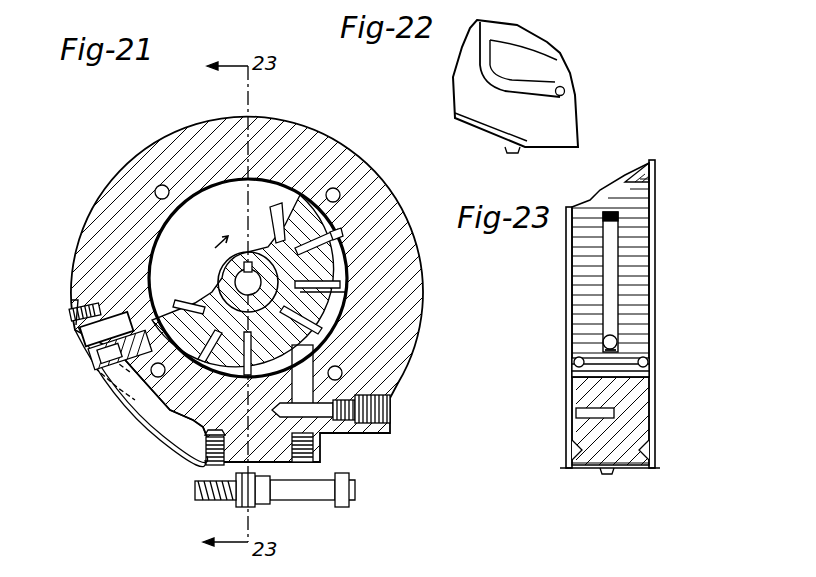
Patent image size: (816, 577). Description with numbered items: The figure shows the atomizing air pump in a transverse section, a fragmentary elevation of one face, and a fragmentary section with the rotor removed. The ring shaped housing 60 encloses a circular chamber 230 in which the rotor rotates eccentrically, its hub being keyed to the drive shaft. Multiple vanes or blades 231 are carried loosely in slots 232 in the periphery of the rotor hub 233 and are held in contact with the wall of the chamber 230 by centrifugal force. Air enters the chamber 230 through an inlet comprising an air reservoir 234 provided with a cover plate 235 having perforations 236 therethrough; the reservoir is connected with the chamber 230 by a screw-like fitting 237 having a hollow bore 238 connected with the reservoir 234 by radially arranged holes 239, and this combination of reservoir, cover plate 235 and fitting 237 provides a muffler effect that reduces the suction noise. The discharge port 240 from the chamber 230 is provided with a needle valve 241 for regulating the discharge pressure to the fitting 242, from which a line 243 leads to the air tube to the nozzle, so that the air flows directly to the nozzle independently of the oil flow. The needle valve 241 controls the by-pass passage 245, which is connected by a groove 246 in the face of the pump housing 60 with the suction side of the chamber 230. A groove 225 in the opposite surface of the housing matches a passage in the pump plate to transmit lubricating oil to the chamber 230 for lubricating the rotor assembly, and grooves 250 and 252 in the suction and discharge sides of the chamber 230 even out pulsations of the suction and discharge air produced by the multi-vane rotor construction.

In FIG. 21, the air pump housing 60 is at (150, 138).
In FIG. 22, the air pump housing 60 is at (557, 72).
In FIG. 23, the air pump housing 60 is at (645, 180).
In FIG. 21, the circular chamber 230 is at (173, 222).
In FIG. 22, the circular chamber 230 is at (523, 43).
In FIG. 23, the circular chamber 230 is at (635, 240).
In FIG. 21, the vanes 231 is at (323, 222).
In FIG. 21, the slots 232 is at (273, 222).
In FIG. 21, the rotor hub 233 is at (325, 270).
In FIG. 21, the groove 250 is at (150, 262).
In FIG. 23, the groove 250 is at (610, 274).
In FIG. 21, the groove 252 is at (345, 290).
In FIG. 21, the discharge port 240 is at (303, 392).
In FIG. 21, the needle valve 241 is at (325, 427).
In FIG. 21, the by-pass passage 245 is at (300, 425).
In FIG. 23, the by-pass passage 245 is at (596, 418).
In FIG. 21, the fitting 242 is at (305, 495).
In FIG. 21, the line 243 is at (200, 493).
In FIG. 21, the groove 225 is at (146, 422).
In FIG. 23, the groove 225 is at (645, 368).
In FIG. 21, the perforations 236 is at (112, 398).
In FIG. 21, the hollow bore 238 is at (122, 382).
In FIG. 21, the radially arranged holes 239 is at (92, 378).
In FIG. 21, the screw-like fitting 237 is at (100, 352).
In FIG. 23, the screw-like fitting 237 is at (616, 342).
In FIG. 21, the cover plate 235 is at (90, 333).
In FIG. 23, the cover plate 235 is at (652, 455).
In FIG. 21, the air reservoir 234 is at (73, 312).
In FIG. 22, the groove 246 is at (483, 63).
In FIG. 23, the groove 246 is at (572, 367).